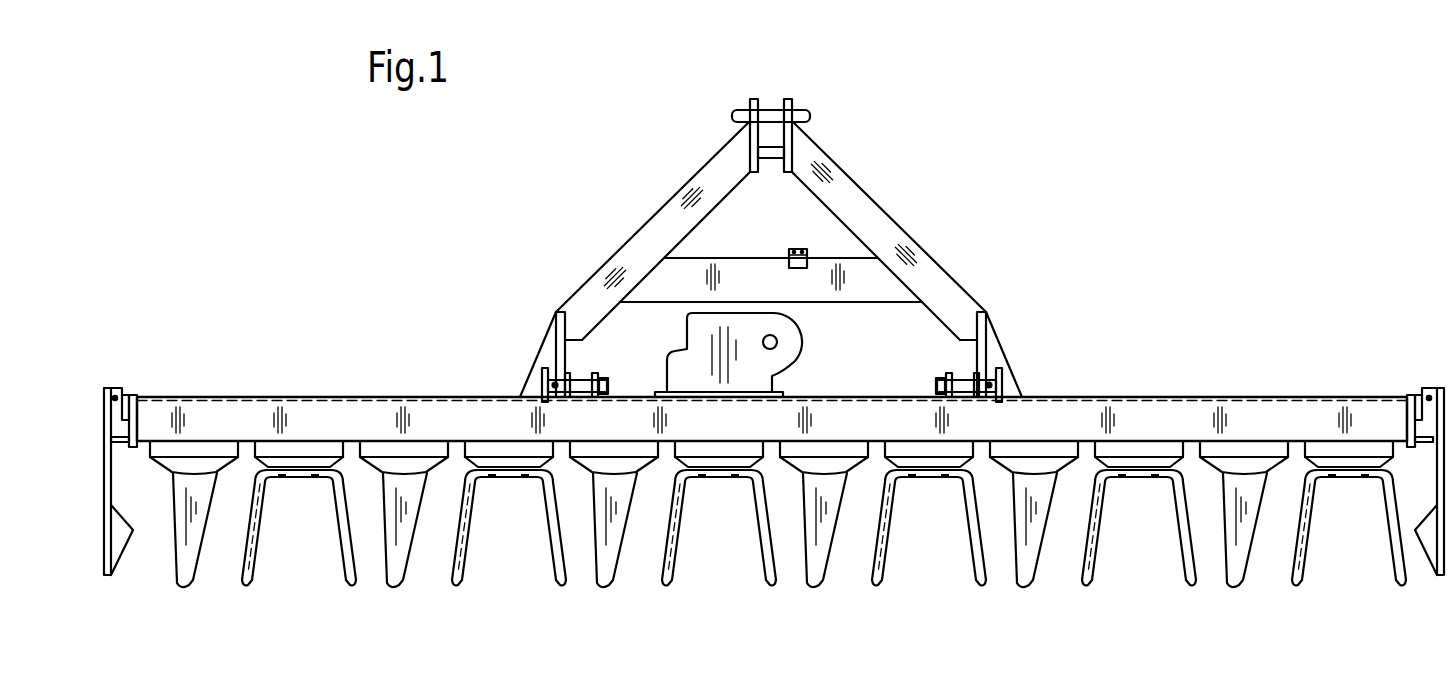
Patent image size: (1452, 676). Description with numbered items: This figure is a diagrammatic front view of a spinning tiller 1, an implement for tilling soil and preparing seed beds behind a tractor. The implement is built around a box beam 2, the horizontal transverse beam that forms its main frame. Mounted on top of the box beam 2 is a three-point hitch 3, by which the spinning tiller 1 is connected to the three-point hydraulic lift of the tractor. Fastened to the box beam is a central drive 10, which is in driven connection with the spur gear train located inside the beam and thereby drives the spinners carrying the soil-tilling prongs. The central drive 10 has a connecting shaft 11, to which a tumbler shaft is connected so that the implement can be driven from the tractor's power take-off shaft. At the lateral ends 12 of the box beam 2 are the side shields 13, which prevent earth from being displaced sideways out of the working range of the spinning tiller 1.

The spinning tiller 1 is at (1168, 379).
The box beam 2 is at (1260, 415).
The three-point hitch 3 is at (867, 210).
The central drive 10 is at (752, 360).
The connecting shaft 11 is at (777, 340).
The lateral ends 12 is at (135, 393).
The side shields 13 is at (104, 458).